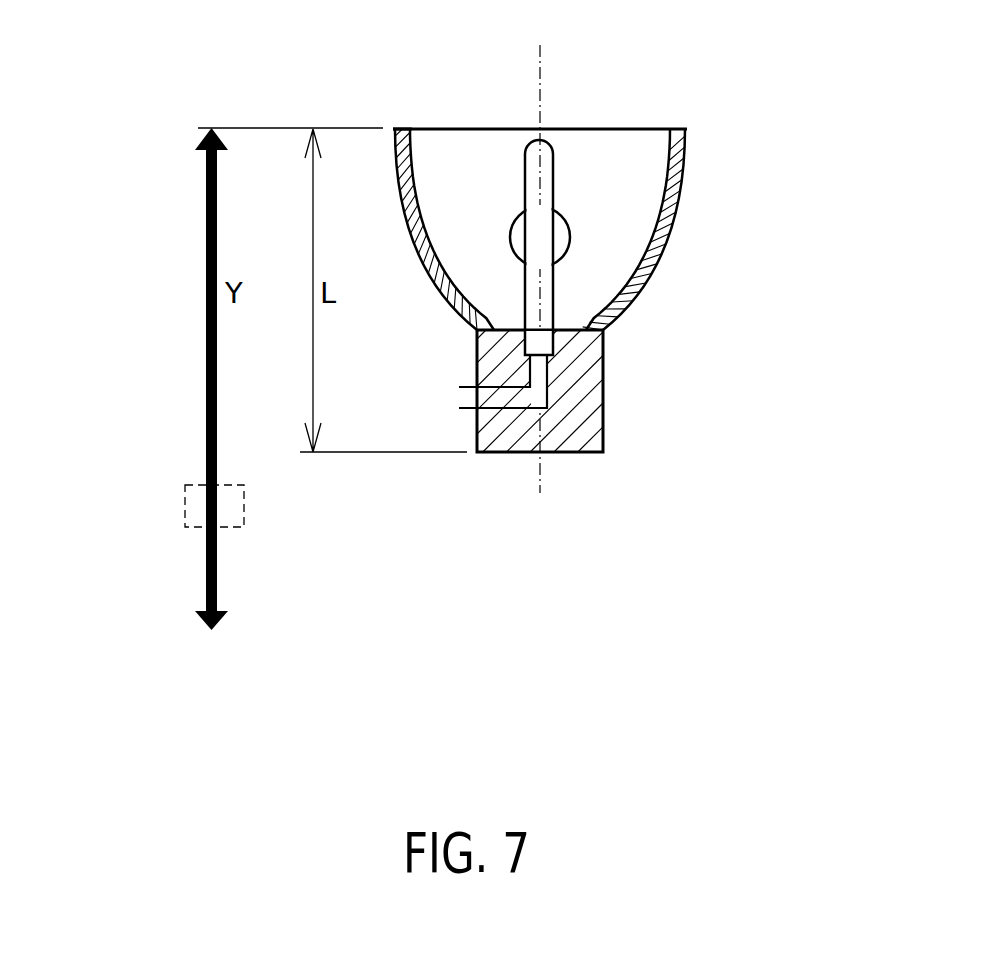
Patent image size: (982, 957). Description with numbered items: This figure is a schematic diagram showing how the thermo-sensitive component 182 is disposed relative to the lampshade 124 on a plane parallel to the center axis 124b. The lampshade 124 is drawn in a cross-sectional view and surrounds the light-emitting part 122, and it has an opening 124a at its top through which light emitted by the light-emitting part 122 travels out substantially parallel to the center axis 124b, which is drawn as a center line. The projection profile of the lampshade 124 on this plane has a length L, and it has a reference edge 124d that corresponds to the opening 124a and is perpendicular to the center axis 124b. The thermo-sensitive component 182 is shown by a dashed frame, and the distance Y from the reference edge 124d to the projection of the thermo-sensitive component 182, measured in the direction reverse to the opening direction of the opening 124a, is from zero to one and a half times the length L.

The lampshade 124 is at (680, 177).
The opening 124a is at (633, 133).
The center axis 124b is at (540, 65).
The reference edge 124d is at (425, 108).
The light-emitting part 122 is at (556, 290).
The thermo-sensitive component 182 is at (189, 485).